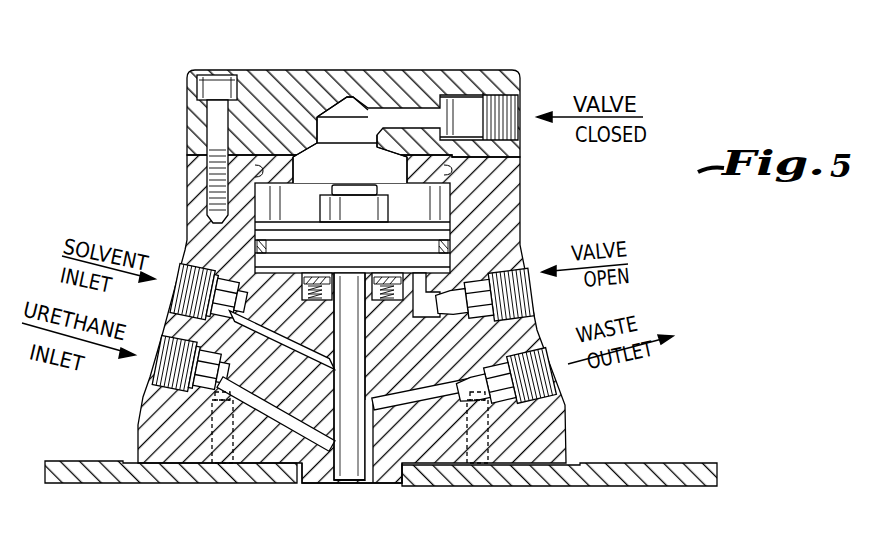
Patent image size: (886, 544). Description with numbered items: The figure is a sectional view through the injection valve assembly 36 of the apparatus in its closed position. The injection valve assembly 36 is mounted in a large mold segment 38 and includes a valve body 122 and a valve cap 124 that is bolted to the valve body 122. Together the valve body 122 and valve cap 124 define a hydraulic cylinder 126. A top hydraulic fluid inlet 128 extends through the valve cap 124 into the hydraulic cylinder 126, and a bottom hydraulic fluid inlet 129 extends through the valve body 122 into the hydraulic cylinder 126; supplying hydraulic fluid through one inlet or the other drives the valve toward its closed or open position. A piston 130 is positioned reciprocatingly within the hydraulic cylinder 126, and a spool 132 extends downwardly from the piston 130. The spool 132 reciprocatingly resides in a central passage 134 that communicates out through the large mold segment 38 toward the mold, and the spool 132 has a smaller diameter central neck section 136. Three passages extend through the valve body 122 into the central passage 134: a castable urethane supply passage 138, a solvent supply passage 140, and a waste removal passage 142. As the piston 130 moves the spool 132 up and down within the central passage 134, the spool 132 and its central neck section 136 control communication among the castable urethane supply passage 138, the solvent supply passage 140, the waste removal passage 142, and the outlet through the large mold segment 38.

The injection valve assembly 36 is at (430, 57).
The large mold segment 38 is at (663, 465).
The valve body 122 is at (567, 418).
The valve cap 124 is at (179, 149).
The hydraulic cylinder 126 is at (452, 206).
The top hydraulic fluid inlet 128 is at (479, 95).
The bottom hydraulic fluid inlet 129 is at (523, 270).
The piston 130 is at (255, 240).
The spool 132 is at (362, 368).
The central passage 134 is at (284, 393).
The central neck section 136 is at (307, 490).
The castable urethane supply passage 138 is at (157, 373).
The solvent supply passage 140 is at (176, 296).
The waste removal passage 142 is at (553, 384).